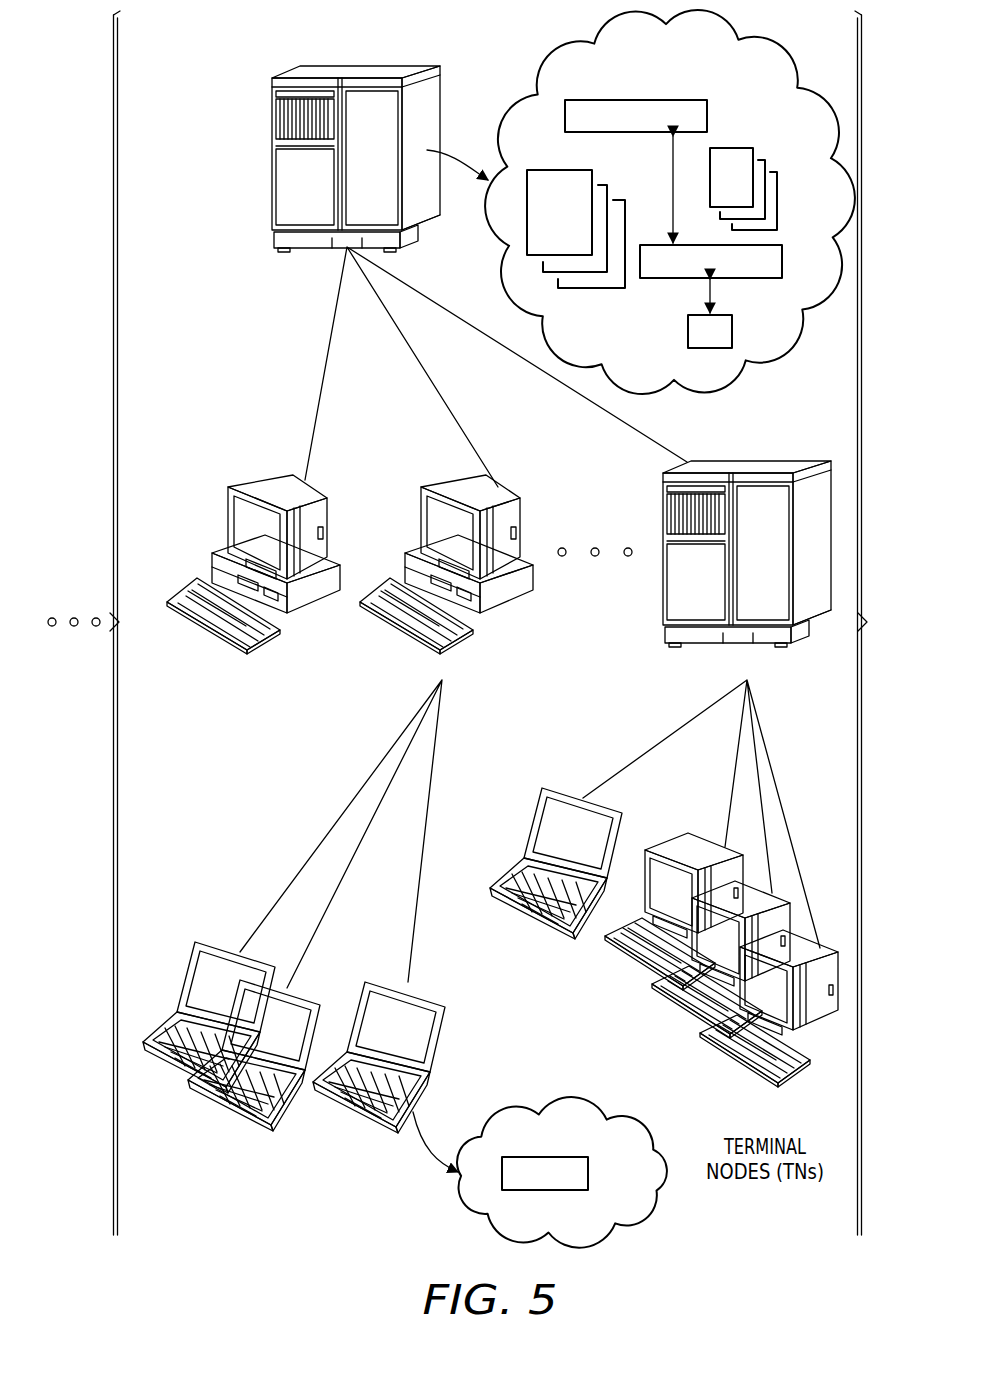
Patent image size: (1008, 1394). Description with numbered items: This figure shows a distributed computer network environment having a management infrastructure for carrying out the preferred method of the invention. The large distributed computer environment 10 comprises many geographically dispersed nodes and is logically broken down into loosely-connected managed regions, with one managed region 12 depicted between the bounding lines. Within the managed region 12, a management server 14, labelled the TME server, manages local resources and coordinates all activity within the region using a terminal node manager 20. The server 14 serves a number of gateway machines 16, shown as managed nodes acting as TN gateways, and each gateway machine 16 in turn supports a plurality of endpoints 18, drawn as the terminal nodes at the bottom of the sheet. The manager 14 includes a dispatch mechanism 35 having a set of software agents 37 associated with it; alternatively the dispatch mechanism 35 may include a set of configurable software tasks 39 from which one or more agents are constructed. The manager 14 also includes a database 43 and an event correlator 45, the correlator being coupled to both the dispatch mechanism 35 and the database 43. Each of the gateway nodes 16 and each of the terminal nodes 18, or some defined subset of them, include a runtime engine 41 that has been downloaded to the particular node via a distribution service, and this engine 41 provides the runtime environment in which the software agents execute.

The distributed computer environment 10 is at (206, 841).
The managed region 12 is at (874, 283).
The management server 14 is at (272, 205).
The gateway machine 16 is at (226, 511).
The endpoint 18 is at (462, 940).
The terminal node manager 20 is at (292, 135).
The dispatch mechanism 35 is at (634, 99).
The software agents 37 is at (597, 162).
The configurable software tasks 39 is at (760, 137).
The runtime engine 41 is at (589, 1171).
The database 43 is at (733, 330).
The event correlator 45 is at (657, 279).